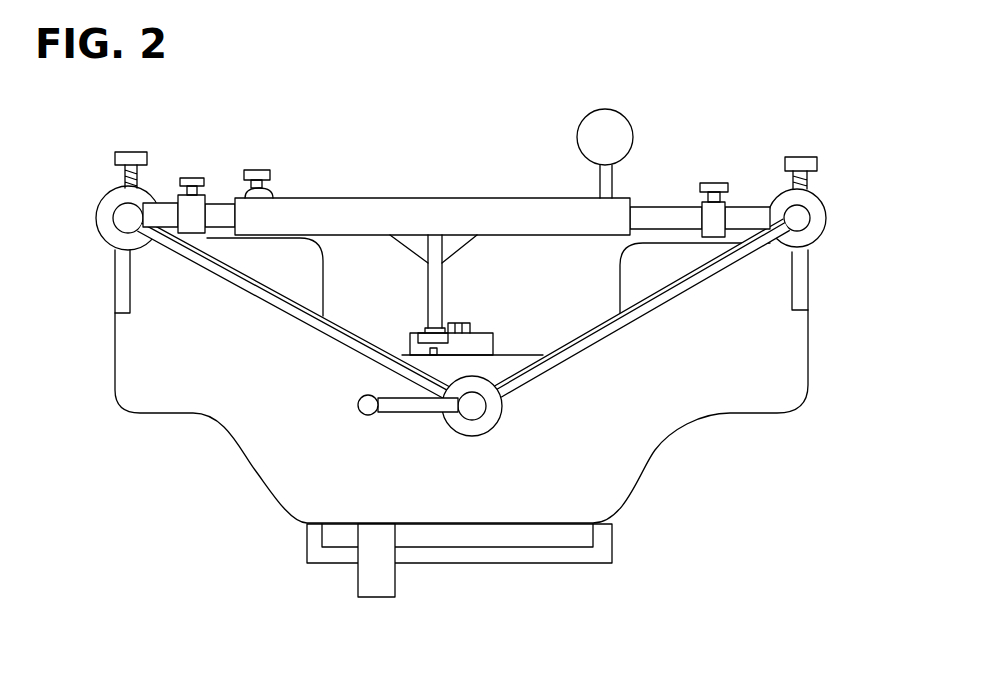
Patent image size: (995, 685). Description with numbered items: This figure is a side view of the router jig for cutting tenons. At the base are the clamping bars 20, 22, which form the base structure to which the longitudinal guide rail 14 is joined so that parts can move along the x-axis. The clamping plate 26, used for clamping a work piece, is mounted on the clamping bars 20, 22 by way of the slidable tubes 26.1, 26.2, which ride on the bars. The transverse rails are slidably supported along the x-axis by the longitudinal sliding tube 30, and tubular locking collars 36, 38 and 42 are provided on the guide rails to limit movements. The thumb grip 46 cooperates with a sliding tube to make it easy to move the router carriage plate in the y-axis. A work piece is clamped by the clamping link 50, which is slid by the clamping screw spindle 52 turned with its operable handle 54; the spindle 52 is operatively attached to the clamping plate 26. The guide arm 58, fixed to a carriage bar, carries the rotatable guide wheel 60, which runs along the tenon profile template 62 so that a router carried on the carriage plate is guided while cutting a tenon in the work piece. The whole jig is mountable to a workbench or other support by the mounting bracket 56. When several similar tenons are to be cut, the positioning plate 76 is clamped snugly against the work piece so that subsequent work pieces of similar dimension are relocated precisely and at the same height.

The first longitudinal guide rail 14 is at (655, 215).
The clamping bar 20 is at (800, 218).
The clamping bar 22 is at (122, 222).
The clamping plate 26 is at (672, 427).
The tube 26.1 is at (117, 195).
The tube 26.2 is at (810, 198).
The longitudinal sliding tube 30 is at (395, 207).
The tubular locking collar 36 is at (185, 178).
The tubular locking collar 38 is at (712, 182).
The tubular locking collar 42 is at (262, 172).
The thumb grip 46 is at (588, 135).
The clamping link 50 is at (580, 343).
The clamping screw spindle 52 is at (483, 410).
The handle 54 is at (400, 412).
The mounting bracket 56 is at (600, 558).
The guide arm 58 is at (437, 282).
The guide wheel 60 is at (427, 339).
The tenon profile template 62 is at (473, 343).
The positioning plate 76 is at (372, 573).